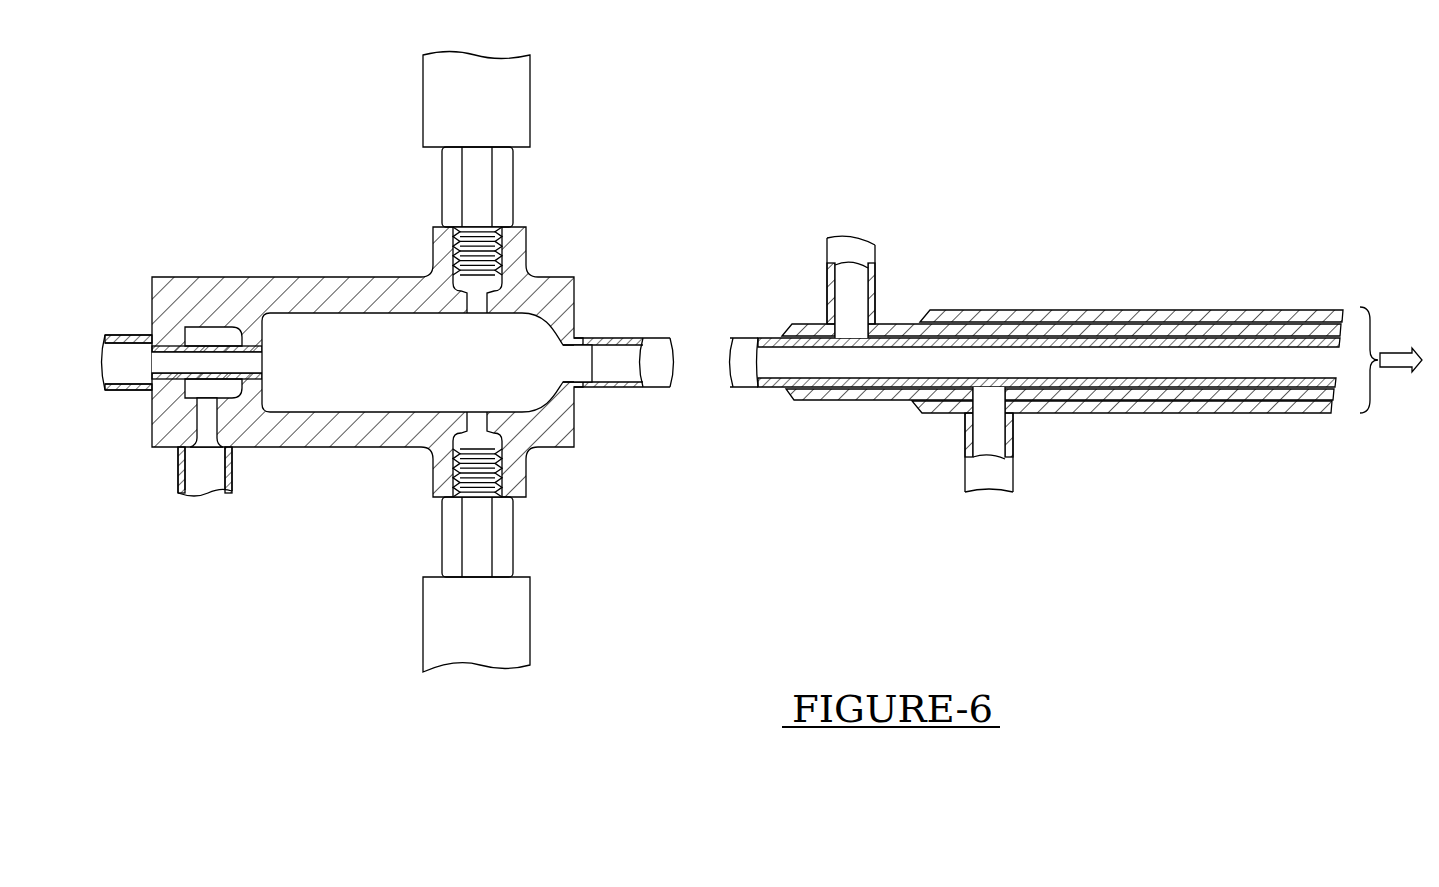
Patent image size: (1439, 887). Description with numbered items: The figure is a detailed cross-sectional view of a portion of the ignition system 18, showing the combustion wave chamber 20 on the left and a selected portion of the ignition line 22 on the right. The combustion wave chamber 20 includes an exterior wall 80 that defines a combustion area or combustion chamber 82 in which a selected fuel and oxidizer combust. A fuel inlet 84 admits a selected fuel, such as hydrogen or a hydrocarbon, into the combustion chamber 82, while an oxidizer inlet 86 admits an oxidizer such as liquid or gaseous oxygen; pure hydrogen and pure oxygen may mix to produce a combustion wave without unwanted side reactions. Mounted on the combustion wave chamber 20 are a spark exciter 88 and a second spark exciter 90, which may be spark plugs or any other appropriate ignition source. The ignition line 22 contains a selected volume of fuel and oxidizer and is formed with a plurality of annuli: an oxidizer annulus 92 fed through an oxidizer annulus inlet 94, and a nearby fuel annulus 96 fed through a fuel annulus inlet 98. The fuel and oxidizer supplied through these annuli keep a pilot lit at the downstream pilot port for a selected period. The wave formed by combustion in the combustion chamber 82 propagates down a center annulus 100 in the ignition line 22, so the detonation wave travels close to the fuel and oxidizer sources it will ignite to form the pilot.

The ignition system 18 is at (692, 92).
The combustion wave chamber 20 is at (227, 277).
The ignition line 22 is at (1162, 322).
The exterior wall 80 is at (175, 293).
The combustion chamber 82 is at (358, 327).
The fuel inlet 84 is at (203, 478).
The oxidizer inlet 86 is at (115, 355).
The spark exciter 88 is at (513, 618).
The second spark exciter 90 is at (518, 113).
The oxidizer annulus 92 is at (1300, 335).
The oxidizer annulus inlet 94 is at (853, 250).
The fuel annulus 96 is at (1265, 400).
The fuel annulus inlet 98 is at (1000, 485).
The center annulus 100 is at (835, 365).